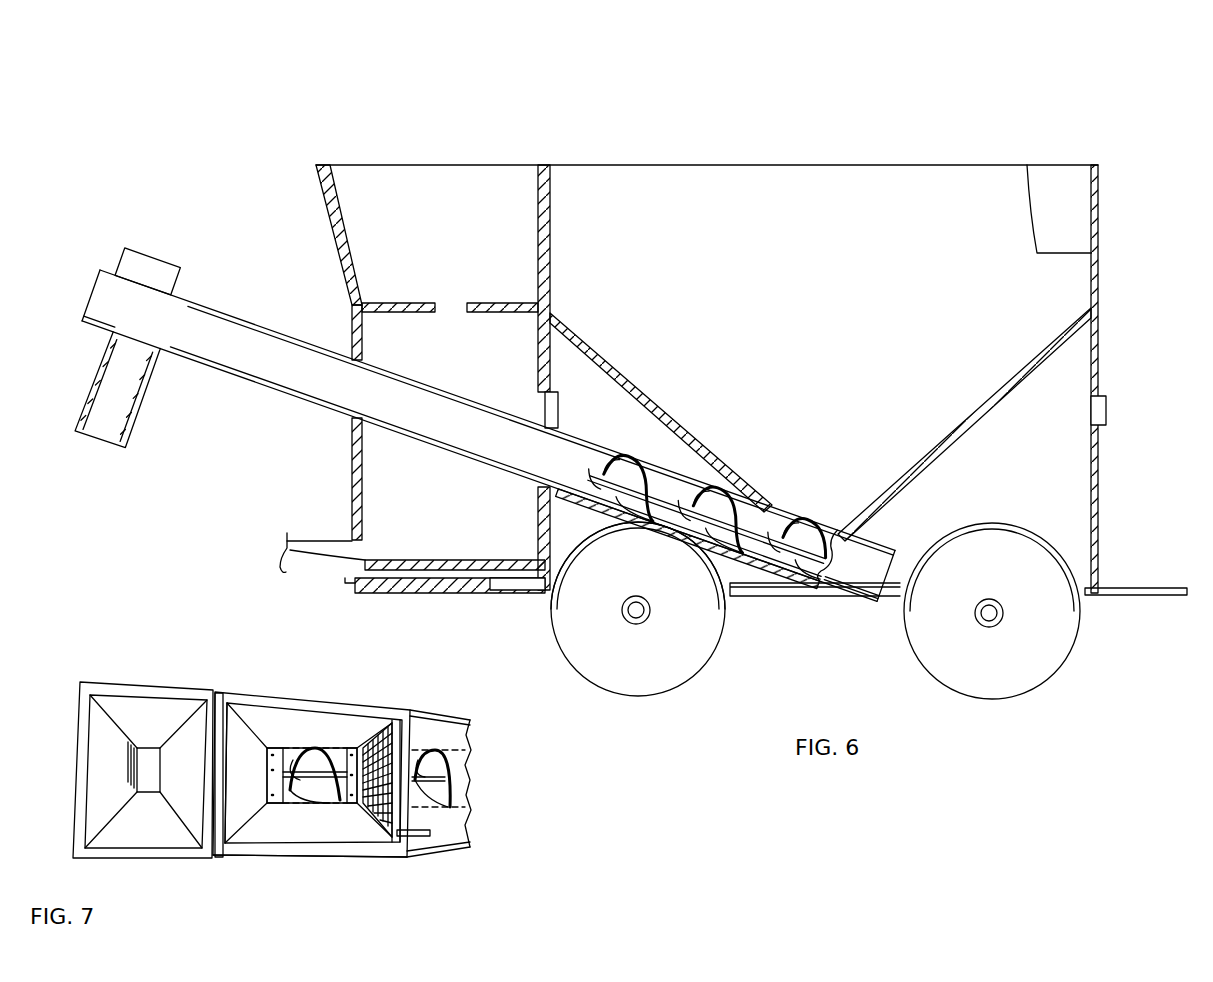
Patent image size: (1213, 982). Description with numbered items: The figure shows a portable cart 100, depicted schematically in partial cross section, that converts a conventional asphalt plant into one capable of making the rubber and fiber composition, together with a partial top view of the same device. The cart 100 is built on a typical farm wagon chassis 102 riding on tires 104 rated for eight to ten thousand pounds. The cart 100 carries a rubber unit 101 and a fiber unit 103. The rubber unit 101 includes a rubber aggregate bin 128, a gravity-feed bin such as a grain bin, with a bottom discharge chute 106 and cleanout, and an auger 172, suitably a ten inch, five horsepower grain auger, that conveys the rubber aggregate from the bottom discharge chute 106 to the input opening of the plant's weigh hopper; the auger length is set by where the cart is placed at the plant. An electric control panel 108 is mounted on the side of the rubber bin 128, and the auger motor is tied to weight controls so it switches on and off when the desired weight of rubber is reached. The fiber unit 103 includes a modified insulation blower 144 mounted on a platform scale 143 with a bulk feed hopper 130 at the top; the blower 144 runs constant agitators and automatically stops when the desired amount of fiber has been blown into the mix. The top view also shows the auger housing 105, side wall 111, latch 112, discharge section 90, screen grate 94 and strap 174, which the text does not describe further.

In FIG. 6, the portable cart 100 is at (1027, 140).
In FIG. 7, the portable cart 100 is at (363, 813).
In FIG. 6, the rubber unit 101 is at (765, 163).
In FIG. 7, the rubber unit 101 is at (235, 795).
In FIG. 6, the farm wagon chassis 102 is at (1115, 585).
In FIG. 6, the fiber unit 103 is at (420, 164).
In FIG. 6, the tires 104 is at (657, 697).
In FIG. 7, the auger housing 105 is at (232, 710).
In FIG. 6, the bottom discharge chute 106 is at (850, 532).
In FIG. 7, the bottom discharge chute 106 is at (345, 762).
In FIG. 6, the electric control panel 108 is at (1077, 208).
In FIG. 7, the side wall 111 is at (227, 830).
In FIG. 7, the latch 112 is at (422, 832).
In FIG. 6, the rubber aggregate bin 128 is at (1077, 262).
In FIG. 7, the rubber aggregate bin 128 is at (343, 857).
In FIG. 6, the bulk feed hopper 130 is at (345, 214).
In FIG. 7, the bulk feed hopper 130 is at (108, 684).
In FIG. 6, the platform scale 143 is at (512, 584).
In FIG. 6, the modified insulation blower 144 is at (352, 471).
In FIG. 6, the auger 172 is at (237, 316).
In FIG. 7, the auger 172 is at (307, 746).
In FIG. 6, the flexible strap 174 is at (322, 540).
In FIG. 7, the discharge section 90 is at (440, 750).
In FIG. 7, the screen grate 94 is at (453, 773).